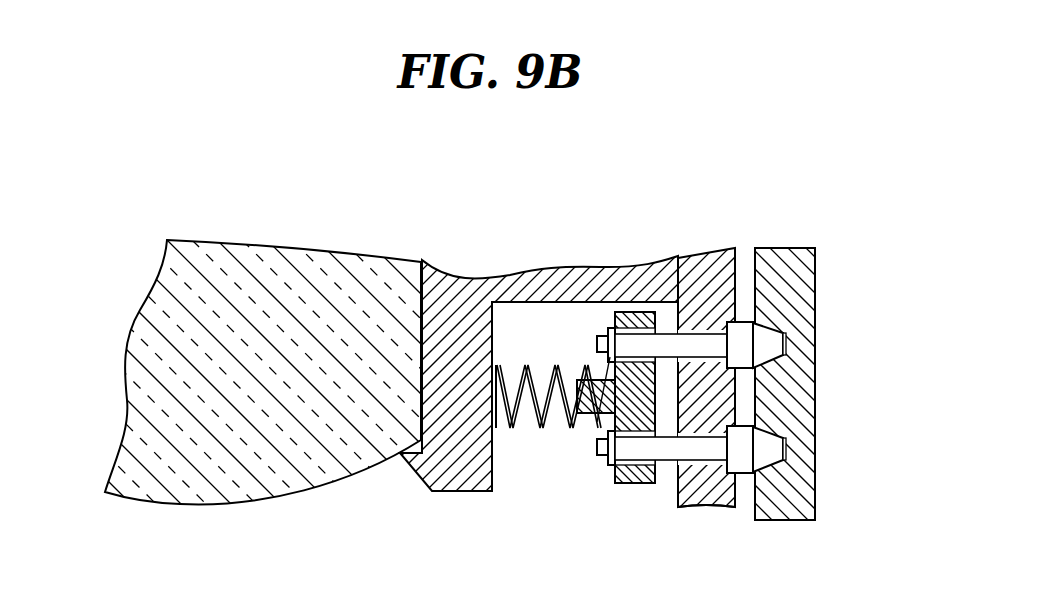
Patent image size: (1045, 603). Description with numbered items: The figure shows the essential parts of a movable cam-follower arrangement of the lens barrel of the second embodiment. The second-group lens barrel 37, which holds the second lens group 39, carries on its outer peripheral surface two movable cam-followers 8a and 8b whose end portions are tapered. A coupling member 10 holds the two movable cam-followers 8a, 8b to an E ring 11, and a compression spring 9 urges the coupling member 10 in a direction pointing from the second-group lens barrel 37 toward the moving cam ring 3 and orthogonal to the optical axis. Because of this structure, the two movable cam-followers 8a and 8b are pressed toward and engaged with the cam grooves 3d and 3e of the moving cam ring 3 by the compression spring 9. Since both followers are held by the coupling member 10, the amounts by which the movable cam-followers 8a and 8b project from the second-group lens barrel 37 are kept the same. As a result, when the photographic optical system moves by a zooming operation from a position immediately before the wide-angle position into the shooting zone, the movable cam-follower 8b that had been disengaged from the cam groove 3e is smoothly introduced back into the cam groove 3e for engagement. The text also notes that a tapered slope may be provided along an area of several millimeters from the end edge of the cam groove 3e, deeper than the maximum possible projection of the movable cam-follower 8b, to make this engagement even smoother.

The moving cam ring 3 is at (788, 252).
The cam groove 3d is at (763, 350).
The cam groove 3e is at (763, 455).
The movable cam-follower 8a is at (702, 347).
The movable cam-follower 8b is at (693, 450).
The compression spring 9 is at (550, 430).
The coupling member 10 is at (641, 484).
The E ring 11 is at (609, 322).
The second-group lens barrel 37 is at (427, 484).
The second lens group 39 is at (203, 432).